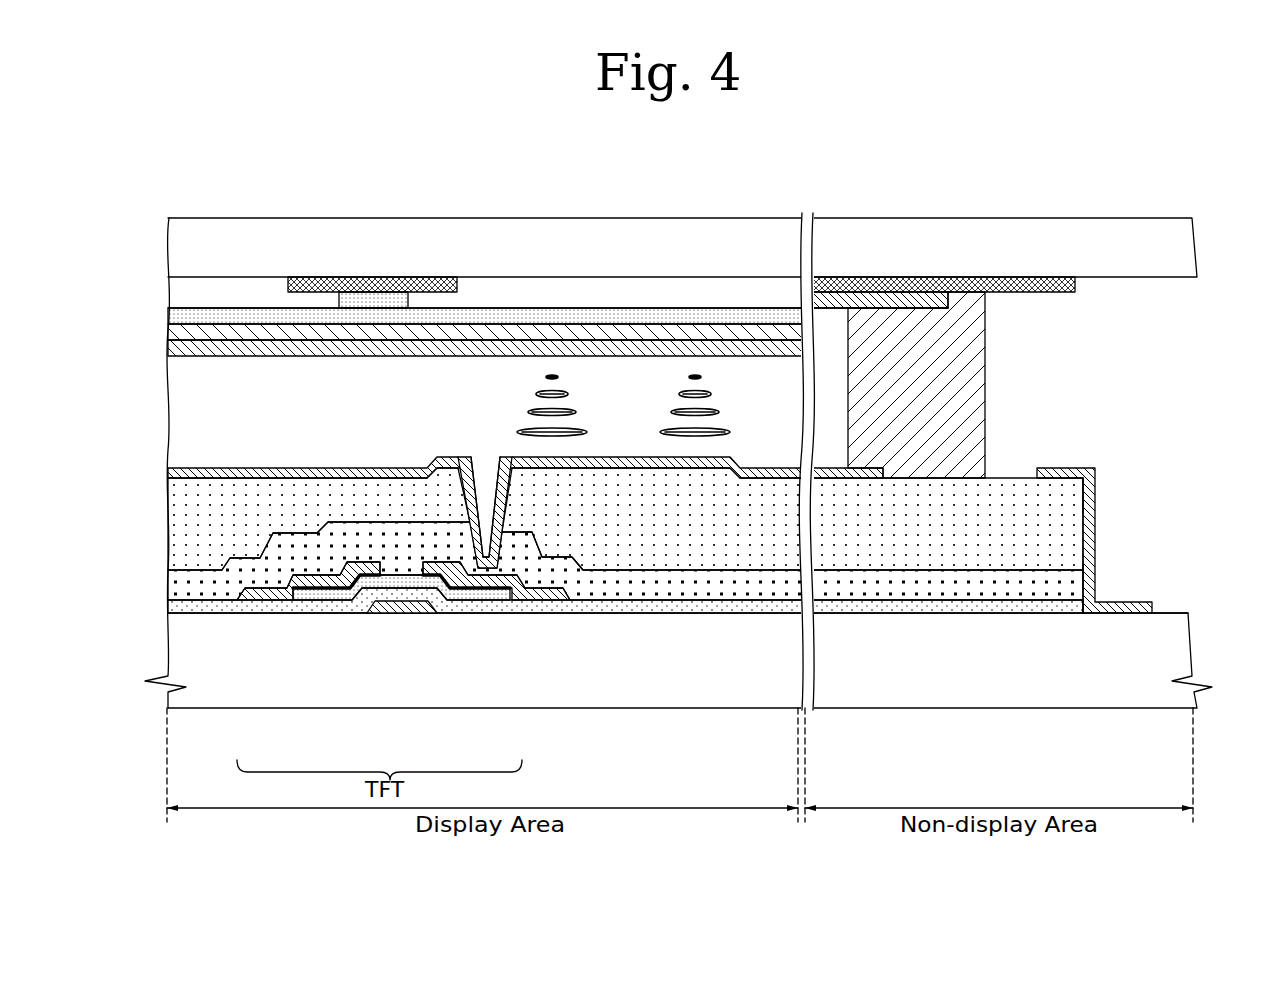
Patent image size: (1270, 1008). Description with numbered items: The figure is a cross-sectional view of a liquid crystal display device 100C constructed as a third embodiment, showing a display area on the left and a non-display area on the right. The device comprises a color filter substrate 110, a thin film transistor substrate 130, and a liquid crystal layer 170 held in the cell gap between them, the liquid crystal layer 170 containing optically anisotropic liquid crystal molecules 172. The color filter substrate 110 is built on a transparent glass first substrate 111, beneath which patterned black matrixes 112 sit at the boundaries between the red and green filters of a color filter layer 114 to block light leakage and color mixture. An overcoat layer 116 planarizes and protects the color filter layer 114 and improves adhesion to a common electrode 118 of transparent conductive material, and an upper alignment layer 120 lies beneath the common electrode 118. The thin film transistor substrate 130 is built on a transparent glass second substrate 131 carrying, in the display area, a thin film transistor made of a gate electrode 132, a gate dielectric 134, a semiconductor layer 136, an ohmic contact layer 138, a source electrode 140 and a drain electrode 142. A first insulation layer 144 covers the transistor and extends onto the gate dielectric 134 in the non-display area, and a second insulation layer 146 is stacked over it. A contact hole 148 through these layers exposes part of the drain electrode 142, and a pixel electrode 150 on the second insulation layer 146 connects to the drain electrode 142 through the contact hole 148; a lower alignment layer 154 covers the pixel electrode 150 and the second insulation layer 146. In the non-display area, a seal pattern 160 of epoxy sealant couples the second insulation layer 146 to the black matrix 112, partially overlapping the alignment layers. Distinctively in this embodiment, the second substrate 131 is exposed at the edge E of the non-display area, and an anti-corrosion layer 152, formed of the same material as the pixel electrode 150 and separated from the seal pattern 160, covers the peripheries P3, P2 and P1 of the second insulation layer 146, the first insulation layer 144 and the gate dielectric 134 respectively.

The liquid crystal display device 100C is at (1262, 147).
The color filter substrate 110 is at (142, 218).
The first substrate 111 is at (1180, 245).
The black matrix 112 is at (370, 284).
The color filter layer 114 is at (658, 290).
The overcoat layer 116 is at (195, 316).
The common electrode 118 is at (246, 333).
The upper alignment layer 120 is at (300, 347).
The thin film transistor substrate 130 is at (142, 468).
The second substrate 131 is at (1180, 652).
The gate electrode 132 is at (400, 606).
The gate dielectric 134 is at (460, 606).
The semiconductor layer 136 is at (354, 606).
The ohmic contact layer 138 is at (306, 606).
The source electrode 140 is at (252, 606).
The drain electrode 142 is at (526, 604).
The first insulation layer 144 is at (630, 604).
The second insulation layer 146 is at (342, 495).
The contact hole 148 is at (512, 507).
The pixel electrode 150 is at (462, 462).
The anti-corrosion layer 152 is at (1093, 528).
The lower alignment layer 154 is at (396, 475).
The seal pattern 160 is at (975, 352).
The liquid crystal layer 170 is at (142, 358).
The liquid crystal molecules 172 is at (730, 413).
The periphery of the gate dielectric P1 is at (1088, 607).
The periphery of the first insulation layer P2 is at (1088, 577).
The periphery of the second insulation layer P3 is at (1088, 495).
The edge of non-display area E is at (1183, 611).